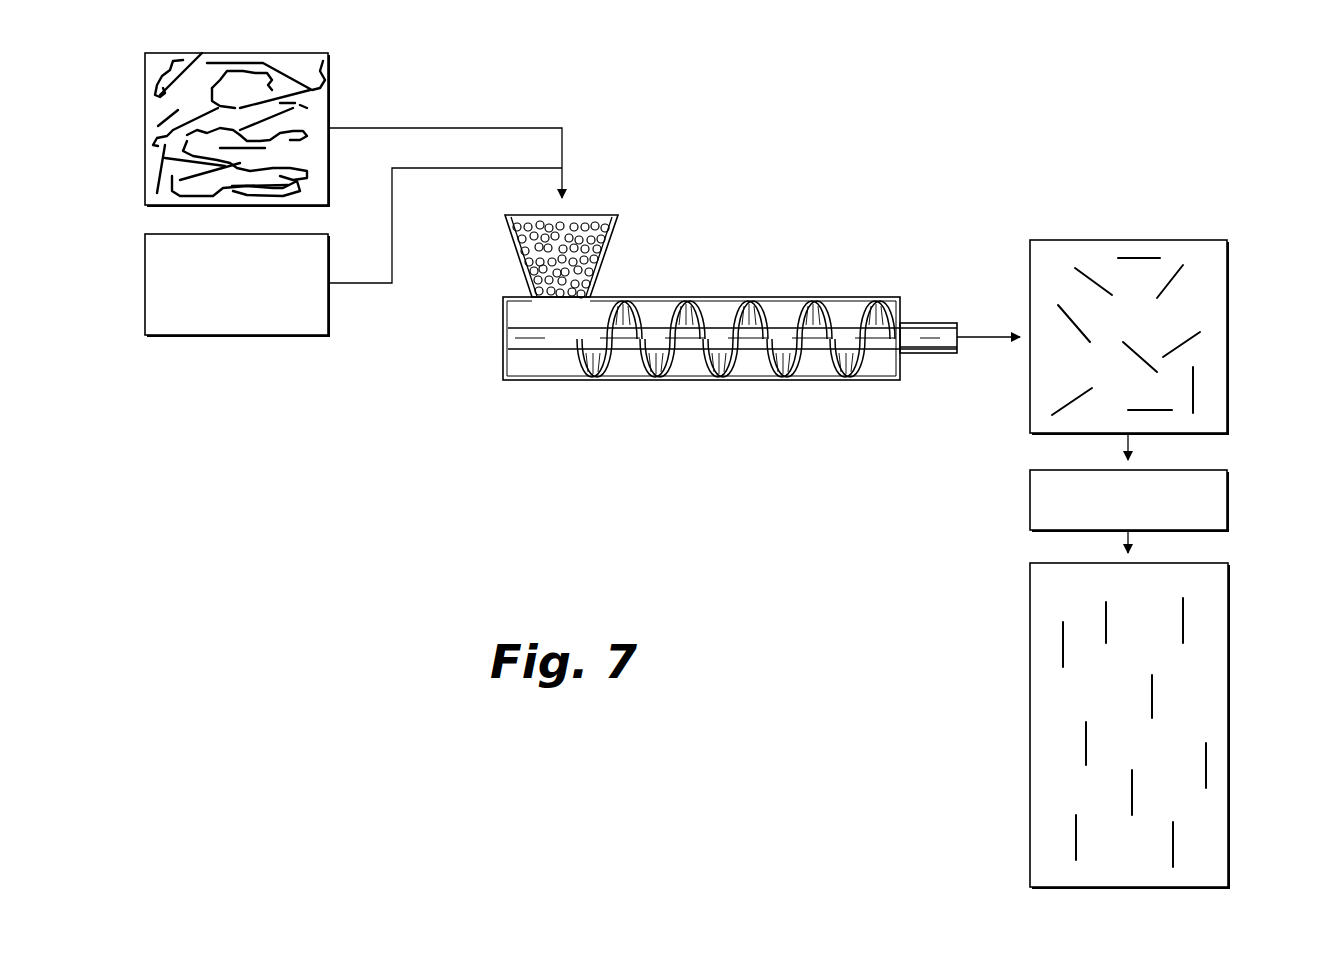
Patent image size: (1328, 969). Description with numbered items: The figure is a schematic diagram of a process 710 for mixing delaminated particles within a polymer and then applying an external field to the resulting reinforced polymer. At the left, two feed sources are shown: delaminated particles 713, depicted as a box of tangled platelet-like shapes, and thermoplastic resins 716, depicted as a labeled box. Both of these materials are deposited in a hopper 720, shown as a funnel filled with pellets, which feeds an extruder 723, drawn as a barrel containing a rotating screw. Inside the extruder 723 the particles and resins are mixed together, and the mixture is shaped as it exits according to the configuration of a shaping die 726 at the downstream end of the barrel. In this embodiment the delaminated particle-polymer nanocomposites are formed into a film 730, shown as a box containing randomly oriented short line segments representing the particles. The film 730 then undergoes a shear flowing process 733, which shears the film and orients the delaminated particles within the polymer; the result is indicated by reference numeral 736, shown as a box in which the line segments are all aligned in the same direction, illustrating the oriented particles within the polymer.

The process 710 is at (685, 100).
The delaminated particles 713 is at (145, 127).
The thermoplastic resins 716 is at (145, 283).
The hopper 720 is at (600, 268).
The extruder 723 is at (562, 381).
The shaping die 726 is at (928, 355).
The film 730 is at (1228, 305).
The shear flowing process 733 is at (1228, 503).
The oriented delaminated particles 736 is at (1229, 692).